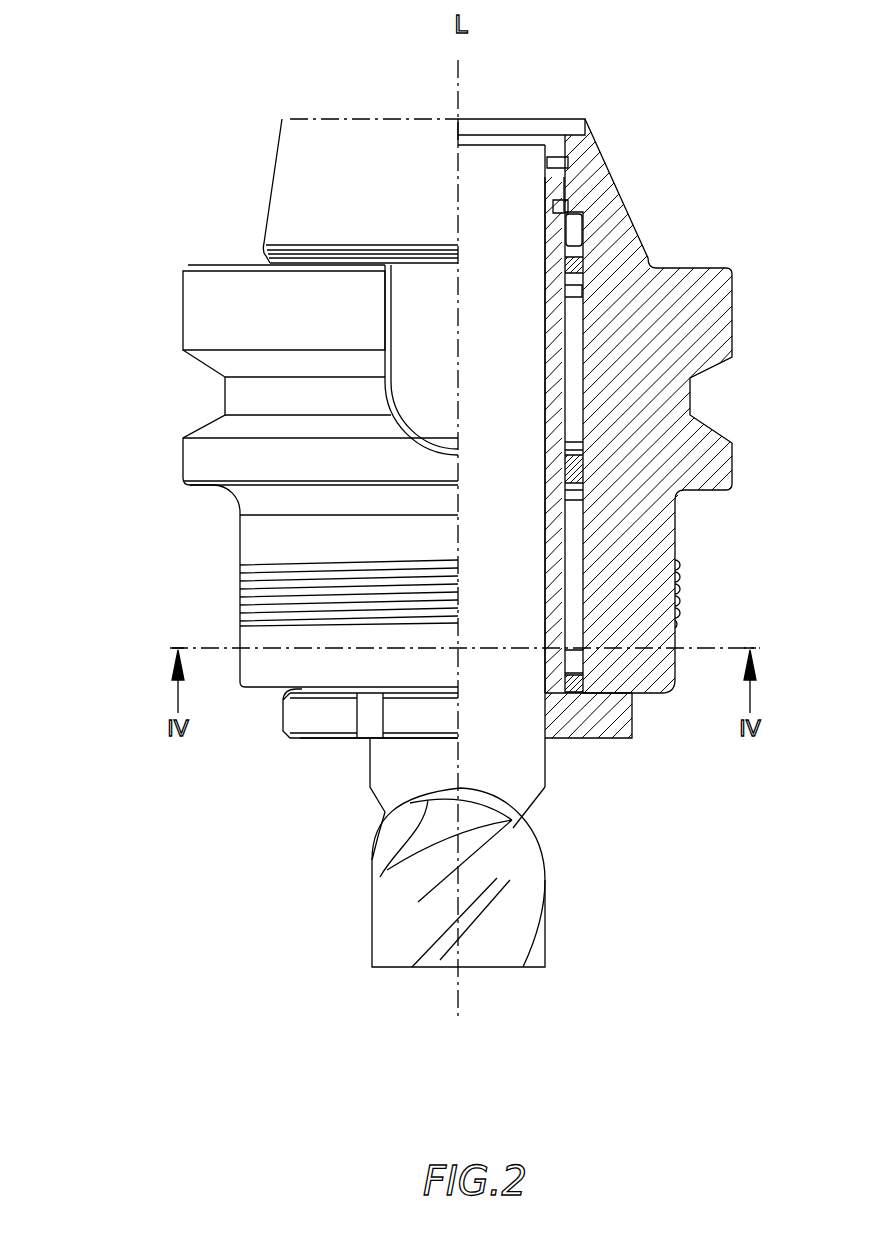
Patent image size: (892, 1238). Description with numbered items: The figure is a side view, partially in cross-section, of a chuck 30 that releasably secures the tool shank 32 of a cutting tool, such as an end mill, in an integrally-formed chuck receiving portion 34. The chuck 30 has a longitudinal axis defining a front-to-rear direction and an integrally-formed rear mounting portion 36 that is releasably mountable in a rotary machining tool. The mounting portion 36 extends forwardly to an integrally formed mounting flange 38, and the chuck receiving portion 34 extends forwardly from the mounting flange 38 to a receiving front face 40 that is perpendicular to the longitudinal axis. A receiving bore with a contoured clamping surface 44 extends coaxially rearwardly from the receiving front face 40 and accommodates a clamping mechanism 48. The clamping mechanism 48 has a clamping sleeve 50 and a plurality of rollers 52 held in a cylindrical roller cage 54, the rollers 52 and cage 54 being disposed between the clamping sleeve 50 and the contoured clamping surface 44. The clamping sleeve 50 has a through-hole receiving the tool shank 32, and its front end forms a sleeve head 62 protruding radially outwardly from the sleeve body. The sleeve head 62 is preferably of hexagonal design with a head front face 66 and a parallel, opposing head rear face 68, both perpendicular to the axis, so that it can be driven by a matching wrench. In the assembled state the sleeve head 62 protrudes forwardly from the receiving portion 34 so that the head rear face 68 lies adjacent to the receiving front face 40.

The chuck 30 is at (176, 121).
The tool shank 32 is at (383, 778).
The chuck receiving portion 34 is at (722, 316).
The rear mounting portion 36 is at (288, 202).
The mounting flange 38 is at (196, 291).
The receiving front face 40 is at (250, 690).
The contoured clamping surface 44 is at (575, 600).
The clamping mechanism 48 is at (600, 468).
The clamping sleeve 50 is at (632, 738).
The rollers 52 is at (603, 270).
The cylindrical roller cage 54 is at (603, 268).
The sleeve head 62 is at (317, 750).
The hexagonal head front face 66 is at (292, 738).
The hexagonal head rear face 68 is at (280, 696).